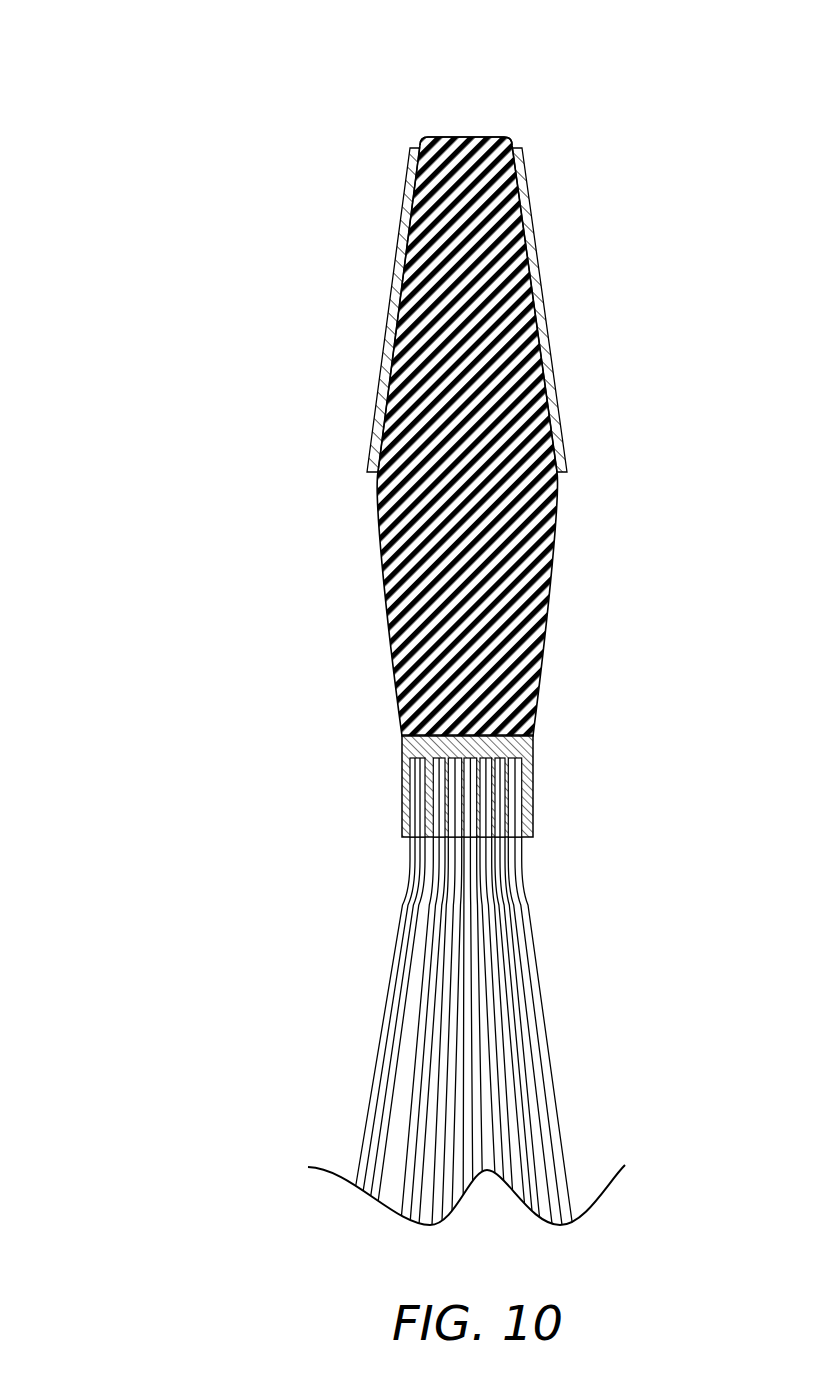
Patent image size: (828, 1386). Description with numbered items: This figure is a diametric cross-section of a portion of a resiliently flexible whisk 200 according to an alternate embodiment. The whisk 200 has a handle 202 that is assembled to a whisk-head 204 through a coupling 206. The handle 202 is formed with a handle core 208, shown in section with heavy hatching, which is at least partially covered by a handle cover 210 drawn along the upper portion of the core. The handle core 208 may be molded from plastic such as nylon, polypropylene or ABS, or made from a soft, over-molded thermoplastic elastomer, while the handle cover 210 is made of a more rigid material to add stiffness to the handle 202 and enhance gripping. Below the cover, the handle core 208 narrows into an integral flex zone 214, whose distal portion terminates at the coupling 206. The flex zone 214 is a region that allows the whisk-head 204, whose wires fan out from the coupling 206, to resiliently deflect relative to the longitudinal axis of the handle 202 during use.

The resiliently flexible whisk 200 is at (225, 78).
The handle 202 is at (447, 125).
The whisk-head 204 is at (380, 1038).
The coupling 206 is at (392, 787).
The handle core 208 is at (550, 560).
The handle cover 210 is at (542, 302).
The flex zone 214 is at (355, 543).